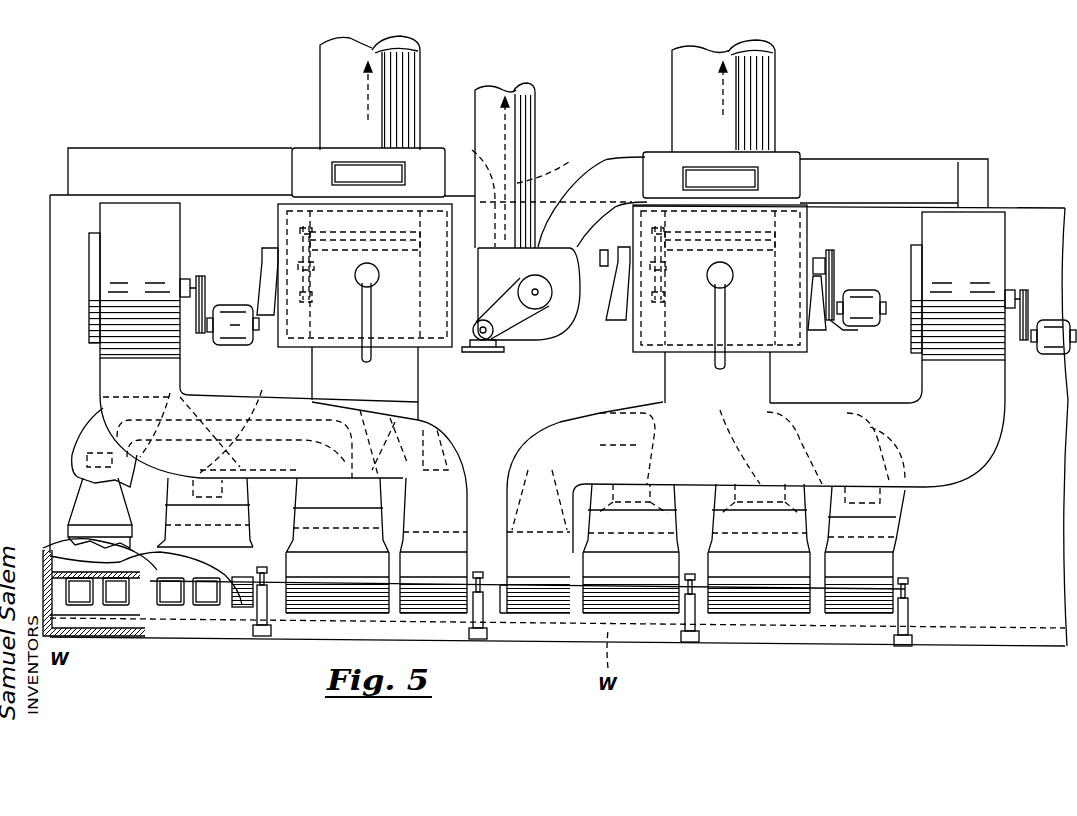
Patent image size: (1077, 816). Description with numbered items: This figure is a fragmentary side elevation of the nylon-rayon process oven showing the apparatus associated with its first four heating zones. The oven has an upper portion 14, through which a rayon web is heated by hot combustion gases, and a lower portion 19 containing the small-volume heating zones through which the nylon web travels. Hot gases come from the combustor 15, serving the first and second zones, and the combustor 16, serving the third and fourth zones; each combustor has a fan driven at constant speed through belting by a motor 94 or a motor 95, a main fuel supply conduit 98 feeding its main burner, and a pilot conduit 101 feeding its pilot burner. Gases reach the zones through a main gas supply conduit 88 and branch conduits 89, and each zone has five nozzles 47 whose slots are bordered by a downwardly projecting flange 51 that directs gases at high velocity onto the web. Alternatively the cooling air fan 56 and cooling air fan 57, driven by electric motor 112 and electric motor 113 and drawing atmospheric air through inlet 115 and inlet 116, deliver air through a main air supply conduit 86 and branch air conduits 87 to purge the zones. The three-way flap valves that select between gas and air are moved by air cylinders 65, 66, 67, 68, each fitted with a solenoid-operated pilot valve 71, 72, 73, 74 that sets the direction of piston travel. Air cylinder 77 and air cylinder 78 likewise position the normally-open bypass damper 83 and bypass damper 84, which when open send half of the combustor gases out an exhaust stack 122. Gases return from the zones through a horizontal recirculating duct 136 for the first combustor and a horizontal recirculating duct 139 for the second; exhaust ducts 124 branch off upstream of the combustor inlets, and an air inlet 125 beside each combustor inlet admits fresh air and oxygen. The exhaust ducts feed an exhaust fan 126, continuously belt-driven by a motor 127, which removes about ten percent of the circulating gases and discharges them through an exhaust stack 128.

The upper portion of the nylon-rayon process oven 14 is at (42, 392).
The combustor 15 is at (445, 349).
The combustor 16 is at (808, 348).
The lower portion of the nylon-rayon process oven 19 is at (122, 646).
The nozzles 47 is at (108, 578).
The flange 51 is at (125, 630).
The cooling air fan 56 is at (172, 232).
The cooling air fan 57 is at (998, 243).
The air cylinder 65 is at (268, 620).
The air cylinder 66 is at (487, 618).
The air cylinder 67 is at (697, 620).
The air cylinder 68 is at (910, 617).
The solenoid-operated pilot valve 71 is at (255, 638).
The solenoid-operated pilot valve 72 is at (478, 641).
The solenoid-operated pilot valve 73 is at (686, 642).
The solenoid-operated pilot valve 74 is at (898, 647).
The air cylinder 77 is at (312, 290).
The air cylinder 78 is at (664, 290).
The bypass valve or damper 83 is at (360, 234).
The bypass valve or damper 84 is at (710, 240).
The main air supply conduit 86 is at (181, 379).
The branch air conduits 87 is at (80, 446).
The main gas supply conduit 88 is at (420, 398).
The branch conduits 89 is at (270, 388).
The motor 94 is at (523, 287).
The motor 95 is at (884, 281).
The main fuel supply conduit 98 is at (372, 322).
The pilot conduit 101 is at (371, 290).
The electric motor 112 is at (236, 305).
The electric motor 113 is at (1050, 356).
The inlet 115 is at (90, 242).
The inlet 116 is at (912, 252).
The exhaust stack 122 is at (419, 56).
The exhaust ducts 124 is at (587, 175).
The air inlet 125 is at (350, 162).
The exhaust fan 126 is at (556, 334).
The motor 127 is at (496, 352).
The exhaust stack 128 is at (538, 102).
The horizontal recirculating duct 136 is at (205, 149).
The horizontal recirculating duct 139 is at (876, 160).